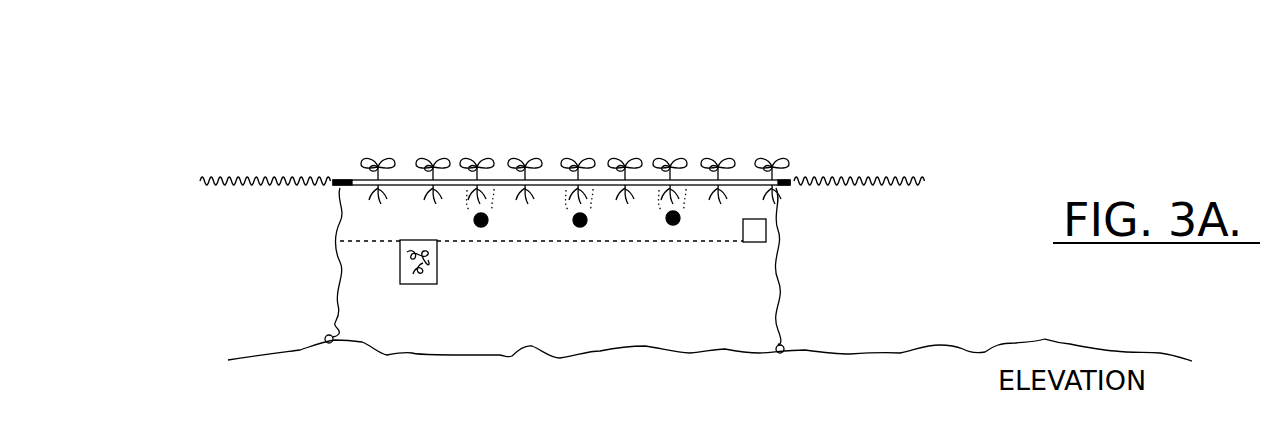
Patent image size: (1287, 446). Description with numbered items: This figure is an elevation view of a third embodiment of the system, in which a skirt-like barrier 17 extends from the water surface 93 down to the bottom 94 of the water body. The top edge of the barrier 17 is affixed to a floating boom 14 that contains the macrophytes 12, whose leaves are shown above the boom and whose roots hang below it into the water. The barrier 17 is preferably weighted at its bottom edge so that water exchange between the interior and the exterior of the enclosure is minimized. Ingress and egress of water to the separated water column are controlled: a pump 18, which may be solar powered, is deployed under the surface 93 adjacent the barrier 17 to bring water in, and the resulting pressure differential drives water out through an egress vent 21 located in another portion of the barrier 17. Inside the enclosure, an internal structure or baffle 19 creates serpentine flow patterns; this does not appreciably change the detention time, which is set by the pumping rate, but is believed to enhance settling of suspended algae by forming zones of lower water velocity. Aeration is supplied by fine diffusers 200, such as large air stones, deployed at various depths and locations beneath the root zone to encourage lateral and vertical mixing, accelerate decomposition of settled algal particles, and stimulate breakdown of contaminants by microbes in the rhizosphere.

The macrophytes 12 is at (428, 160).
The floating boom 14 is at (342, 177).
The barrier 17 is at (783, 232).
The pump 18 is at (398, 258).
The baffle 19 is at (704, 245).
The egress vent 21 is at (766, 236).
The surface 93 is at (865, 176).
The bottom 94 is at (964, 346).
The fine diffusers 200 is at (578, 229).